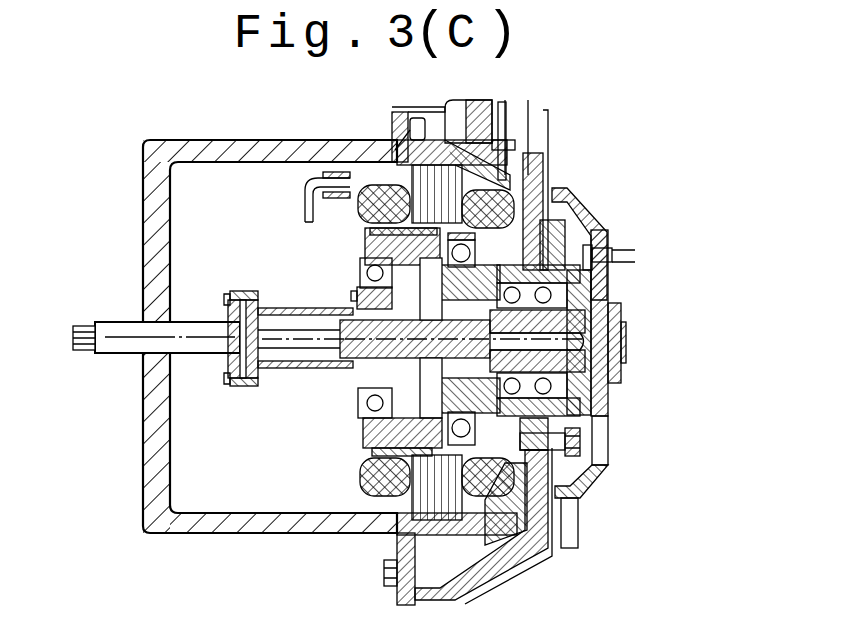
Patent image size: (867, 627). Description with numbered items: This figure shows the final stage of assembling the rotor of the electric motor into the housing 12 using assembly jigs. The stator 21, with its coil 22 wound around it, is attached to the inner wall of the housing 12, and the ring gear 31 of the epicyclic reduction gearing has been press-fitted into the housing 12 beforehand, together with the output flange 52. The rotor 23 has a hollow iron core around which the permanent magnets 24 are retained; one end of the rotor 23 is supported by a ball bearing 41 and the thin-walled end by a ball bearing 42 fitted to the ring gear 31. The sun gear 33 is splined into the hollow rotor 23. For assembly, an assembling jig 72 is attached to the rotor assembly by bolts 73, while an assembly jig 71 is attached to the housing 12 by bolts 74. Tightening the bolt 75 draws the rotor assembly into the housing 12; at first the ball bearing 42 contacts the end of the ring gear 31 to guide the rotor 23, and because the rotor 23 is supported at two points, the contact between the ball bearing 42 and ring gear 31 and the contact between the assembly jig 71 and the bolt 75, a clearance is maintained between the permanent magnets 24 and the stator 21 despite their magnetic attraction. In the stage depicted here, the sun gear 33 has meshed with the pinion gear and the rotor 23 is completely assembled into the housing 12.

The housing 12 is at (545, 165).
The stator 21 is at (412, 180).
The coil 22 is at (368, 200).
The rotor 23 is at (363, 436).
The permanent magnets 24 is at (372, 452).
The ring gear 31 is at (598, 405).
The sun gear 33 is at (423, 360).
The ball bearing 41 is at (358, 404).
The ball bearing 42 is at (472, 428).
The output flange 52 is at (604, 218).
The assembly jig 71 is at (143, 214).
The assembling jig 72 is at (283, 306).
The bolts 73 is at (356, 296).
The bolts 74 is at (384, 573).
The bolt 75 is at (113, 357).